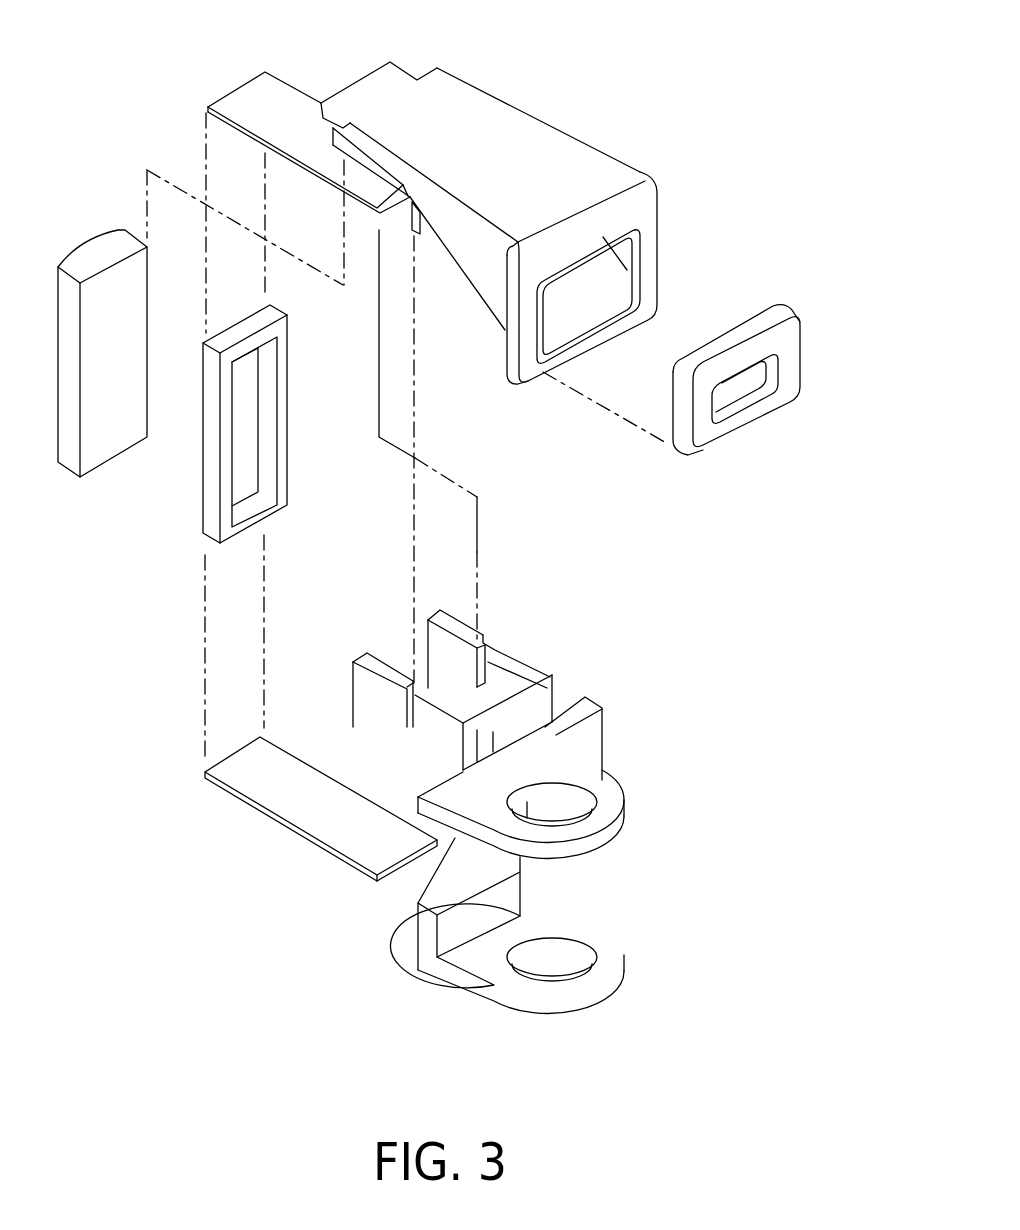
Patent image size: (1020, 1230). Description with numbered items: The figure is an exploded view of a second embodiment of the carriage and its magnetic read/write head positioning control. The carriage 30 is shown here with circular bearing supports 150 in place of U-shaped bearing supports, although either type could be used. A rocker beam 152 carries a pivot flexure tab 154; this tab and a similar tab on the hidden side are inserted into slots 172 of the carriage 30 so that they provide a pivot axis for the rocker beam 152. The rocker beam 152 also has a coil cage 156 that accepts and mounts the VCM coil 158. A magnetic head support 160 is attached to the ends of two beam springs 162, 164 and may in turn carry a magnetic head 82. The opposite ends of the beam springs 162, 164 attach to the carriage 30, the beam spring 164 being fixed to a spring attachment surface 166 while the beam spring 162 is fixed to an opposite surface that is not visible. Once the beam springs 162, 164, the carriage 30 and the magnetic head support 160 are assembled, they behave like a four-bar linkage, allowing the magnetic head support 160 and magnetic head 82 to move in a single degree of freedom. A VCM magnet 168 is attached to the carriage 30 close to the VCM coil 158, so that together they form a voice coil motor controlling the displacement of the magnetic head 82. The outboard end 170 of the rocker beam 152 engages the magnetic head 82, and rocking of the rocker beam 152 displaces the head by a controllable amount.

The carriage 30 is at (585, 747).
The magnetic head 82 is at (102, 252).
The circular bearing supports 150 is at (568, 947).
The rocker beam 152 is at (555, 173).
The pivot flexure tab 154 is at (423, 228).
The coil cage 156 is at (650, 275).
The VCM coil 158 is at (790, 360).
The magnetic head support 160 is at (208, 470).
The beam spring 162 is at (255, 782).
The beam spring 164 is at (250, 100).
The spring attachment surface 166 is at (512, 683).
The VCM magnet 168 is at (550, 705).
The outboard end 170 is at (387, 85).
The slots 172 is at (495, 648).